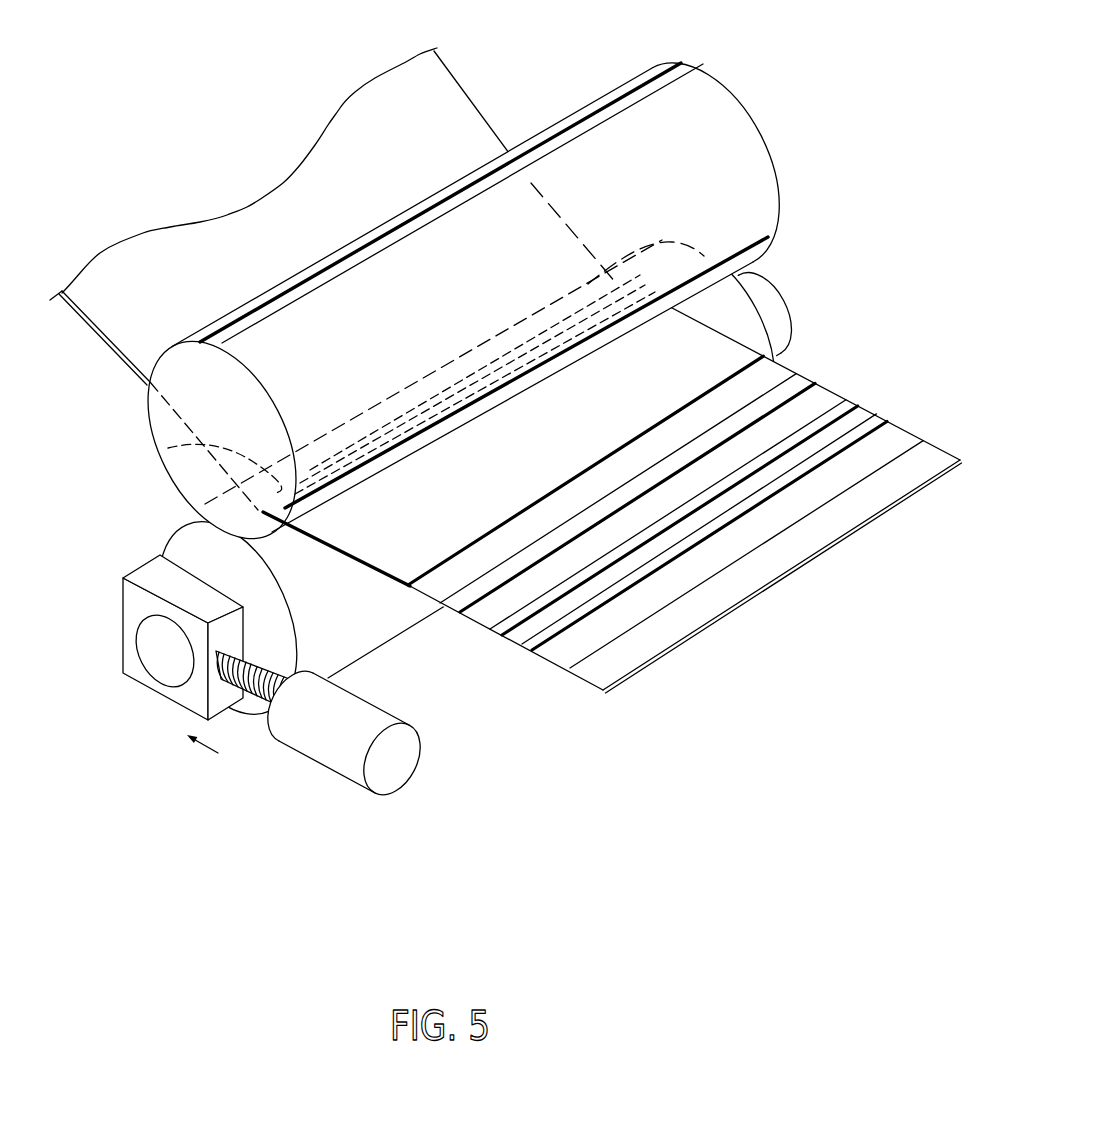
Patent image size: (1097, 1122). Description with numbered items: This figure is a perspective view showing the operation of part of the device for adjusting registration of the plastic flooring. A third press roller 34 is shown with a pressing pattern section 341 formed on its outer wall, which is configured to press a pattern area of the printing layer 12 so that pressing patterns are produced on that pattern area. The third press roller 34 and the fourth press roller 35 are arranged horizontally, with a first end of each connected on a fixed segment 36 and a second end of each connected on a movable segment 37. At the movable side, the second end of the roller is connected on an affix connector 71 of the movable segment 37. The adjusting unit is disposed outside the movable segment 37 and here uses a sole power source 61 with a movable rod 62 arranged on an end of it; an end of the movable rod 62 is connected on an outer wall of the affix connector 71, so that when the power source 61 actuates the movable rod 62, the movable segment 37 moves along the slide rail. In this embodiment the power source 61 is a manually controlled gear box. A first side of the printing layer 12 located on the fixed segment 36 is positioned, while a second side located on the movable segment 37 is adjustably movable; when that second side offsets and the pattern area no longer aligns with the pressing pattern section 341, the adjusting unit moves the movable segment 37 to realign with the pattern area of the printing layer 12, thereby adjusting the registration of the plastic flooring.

The printing layer 12 is at (365, 113).
The third press roller 34 is at (447, 298).
The pressing pattern section 341 is at (164, 447).
The fourth press roller 35 is at (382, 628).
The fixed segment 36 is at (790, 292).
The movable segment 37 is at (126, 631).
The affix connector 71 is at (143, 577).
The movable rod 62 is at (263, 699).
The power source 61 is at (343, 753).